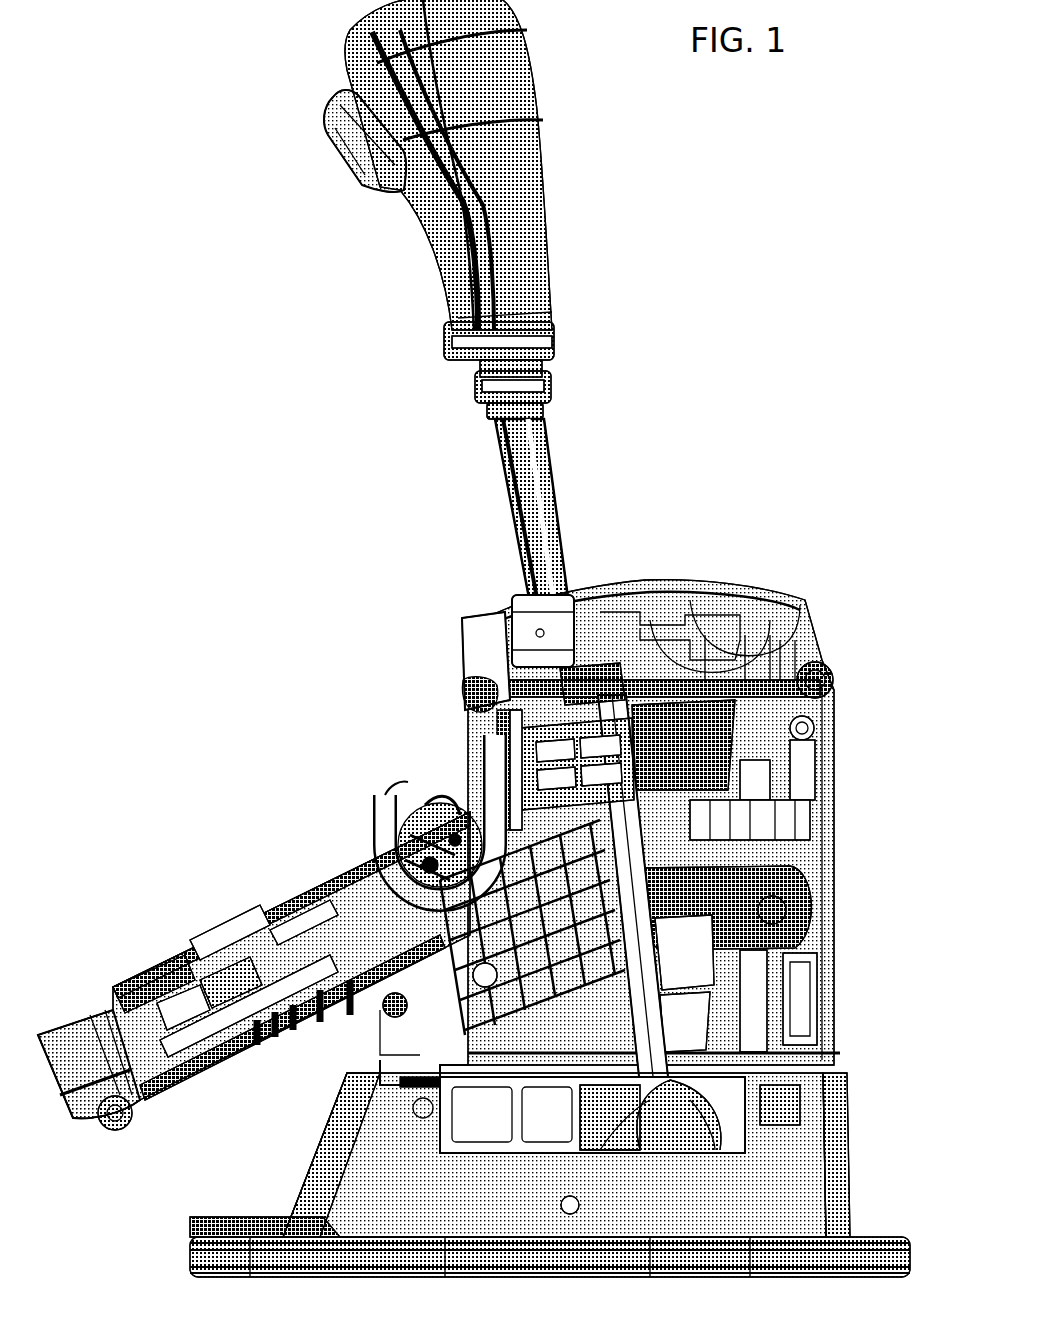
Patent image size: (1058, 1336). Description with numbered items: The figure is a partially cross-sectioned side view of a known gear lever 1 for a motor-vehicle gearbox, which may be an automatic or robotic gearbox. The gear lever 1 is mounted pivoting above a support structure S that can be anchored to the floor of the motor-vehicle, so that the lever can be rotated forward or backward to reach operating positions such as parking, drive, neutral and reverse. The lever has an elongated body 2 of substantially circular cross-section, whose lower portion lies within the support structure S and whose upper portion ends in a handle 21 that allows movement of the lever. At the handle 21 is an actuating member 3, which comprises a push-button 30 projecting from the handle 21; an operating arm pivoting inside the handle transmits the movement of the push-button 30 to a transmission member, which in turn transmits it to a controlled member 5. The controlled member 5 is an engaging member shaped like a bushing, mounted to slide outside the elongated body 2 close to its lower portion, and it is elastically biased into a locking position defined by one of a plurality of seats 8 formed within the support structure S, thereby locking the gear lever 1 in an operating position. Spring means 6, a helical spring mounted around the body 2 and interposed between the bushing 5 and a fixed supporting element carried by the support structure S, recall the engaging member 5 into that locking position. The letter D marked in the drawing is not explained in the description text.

The gear lever 1 is at (577, 377).
The elongated body 2 is at (548, 487).
The handle 21 is at (510, 75).
The actuating member 3 is at (326, 140).
The push-button 30 is at (364, 180).
The controlled member 5 is at (595, 630).
The spring means 6 is at (603, 695).
The seats 8 is at (700, 655).
The support structure S is at (838, 656).
The shift direction D is at (241, 698).